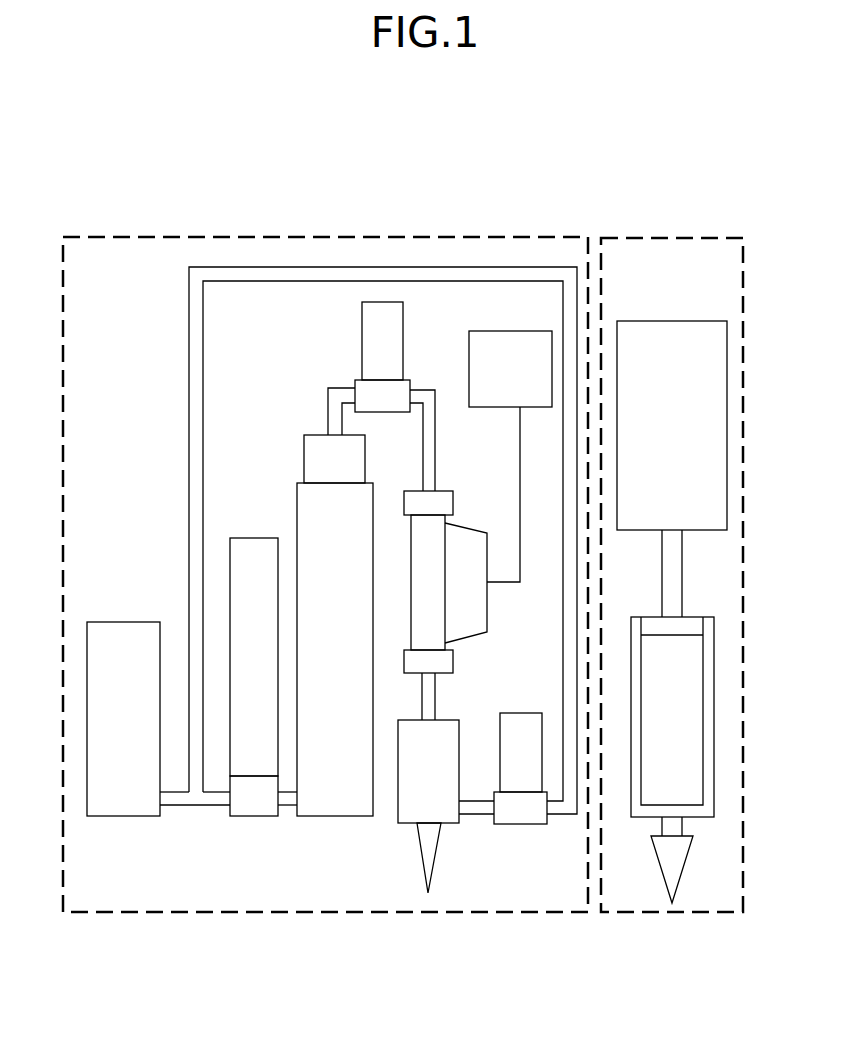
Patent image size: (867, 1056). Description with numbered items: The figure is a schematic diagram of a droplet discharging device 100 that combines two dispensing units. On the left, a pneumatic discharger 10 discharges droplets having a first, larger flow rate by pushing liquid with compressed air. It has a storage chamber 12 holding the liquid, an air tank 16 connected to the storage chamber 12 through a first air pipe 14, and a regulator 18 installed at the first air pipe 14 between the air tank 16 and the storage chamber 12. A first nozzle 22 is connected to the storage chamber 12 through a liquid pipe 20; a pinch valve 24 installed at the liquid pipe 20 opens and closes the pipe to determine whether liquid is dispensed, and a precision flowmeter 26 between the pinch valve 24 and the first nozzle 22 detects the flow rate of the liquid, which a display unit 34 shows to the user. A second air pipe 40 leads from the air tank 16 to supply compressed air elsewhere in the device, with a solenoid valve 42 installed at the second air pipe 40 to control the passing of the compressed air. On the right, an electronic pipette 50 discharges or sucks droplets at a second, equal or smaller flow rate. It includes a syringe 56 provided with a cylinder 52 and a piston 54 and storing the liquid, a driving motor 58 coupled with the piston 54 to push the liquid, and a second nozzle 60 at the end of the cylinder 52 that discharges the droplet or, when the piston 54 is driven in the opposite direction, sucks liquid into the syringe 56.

The droplet discharging device 100 is at (375, 150).
The pneumatic discharger 10 is at (190, 238).
The storage chamber 12 is at (322, 655).
The first air pipe 14 is at (210, 800).
The air tank 16 is at (138, 731).
The regulator 18 is at (269, 672).
The liquid pipe 20 is at (332, 406).
The first nozzle 22 is at (443, 778).
The pinch valve 24 is at (405, 318).
The precision flowmeter 26 is at (432, 554).
The display unit 34 is at (497, 380).
The second air pipe 40 is at (196, 320).
The solenoid valve 42 is at (517, 724).
The electronic pipette 50 is at (680, 238).
The cylinder 52 is at (707, 679).
The piston 54 is at (685, 626).
The syringe 56 is at (714, 753).
The driving motor 58 is at (688, 438).
The second nozzle 60 is at (676, 860).